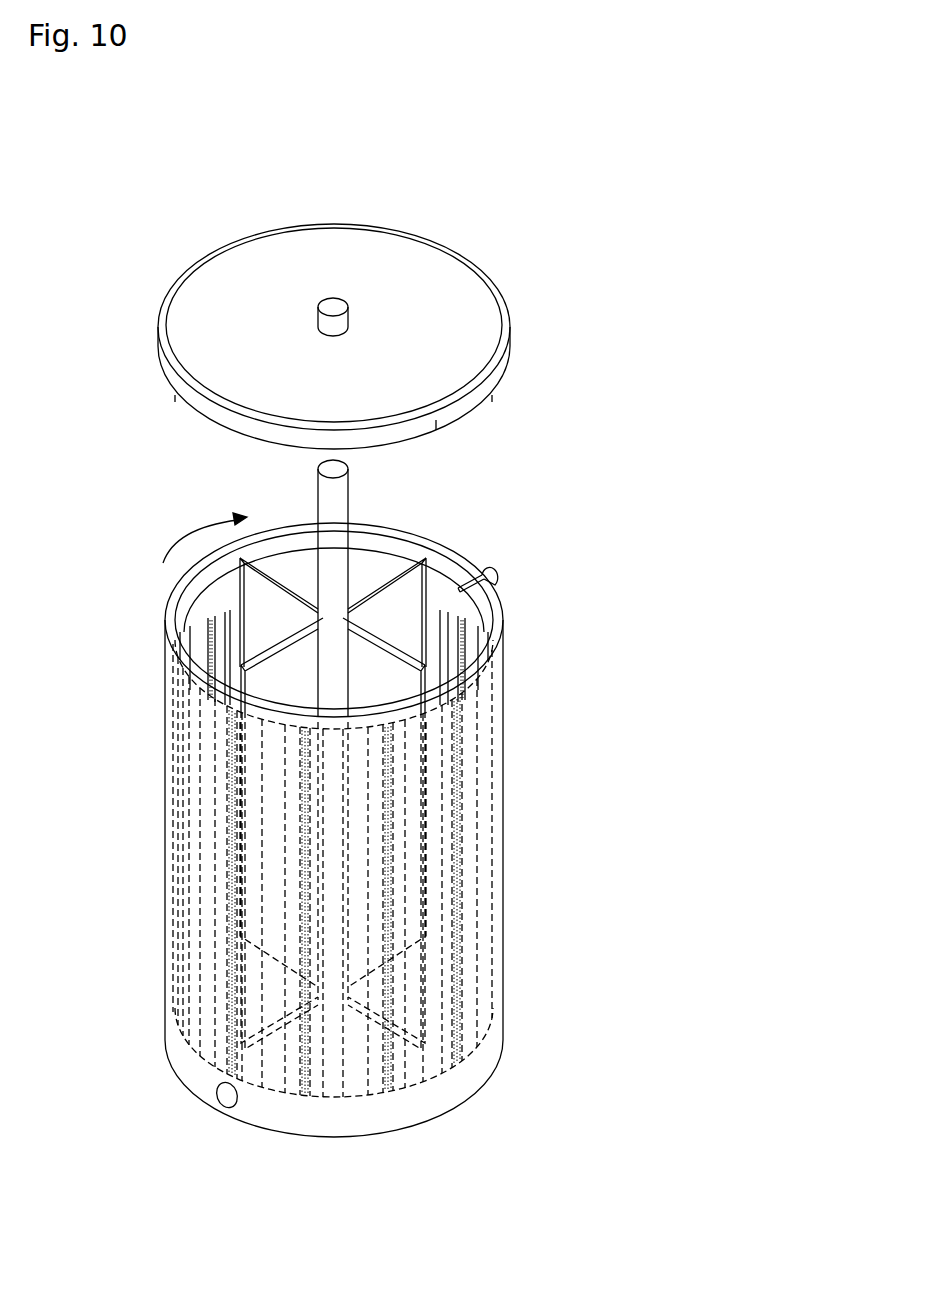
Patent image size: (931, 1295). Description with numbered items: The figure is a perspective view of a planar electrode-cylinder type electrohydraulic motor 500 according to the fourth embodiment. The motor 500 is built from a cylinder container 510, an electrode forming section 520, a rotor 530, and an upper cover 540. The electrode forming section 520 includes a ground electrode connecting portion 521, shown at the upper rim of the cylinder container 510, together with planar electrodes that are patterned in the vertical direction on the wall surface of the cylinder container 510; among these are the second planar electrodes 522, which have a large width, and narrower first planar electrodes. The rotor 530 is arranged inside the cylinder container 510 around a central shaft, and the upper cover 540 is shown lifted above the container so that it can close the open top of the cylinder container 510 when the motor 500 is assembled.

The planar electrode-cylinder type electrohydraulic motor 500 is at (573, 220).
The cylinder container 510 is at (485, 1066).
The electrode forming section 520 is at (388, 557).
The ground electrode connecting portion 521 is at (493, 578).
The second planar electrodes 522 is at (221, 1102).
The rotor 530 is at (415, 627).
The upper cover 540 is at (415, 243).